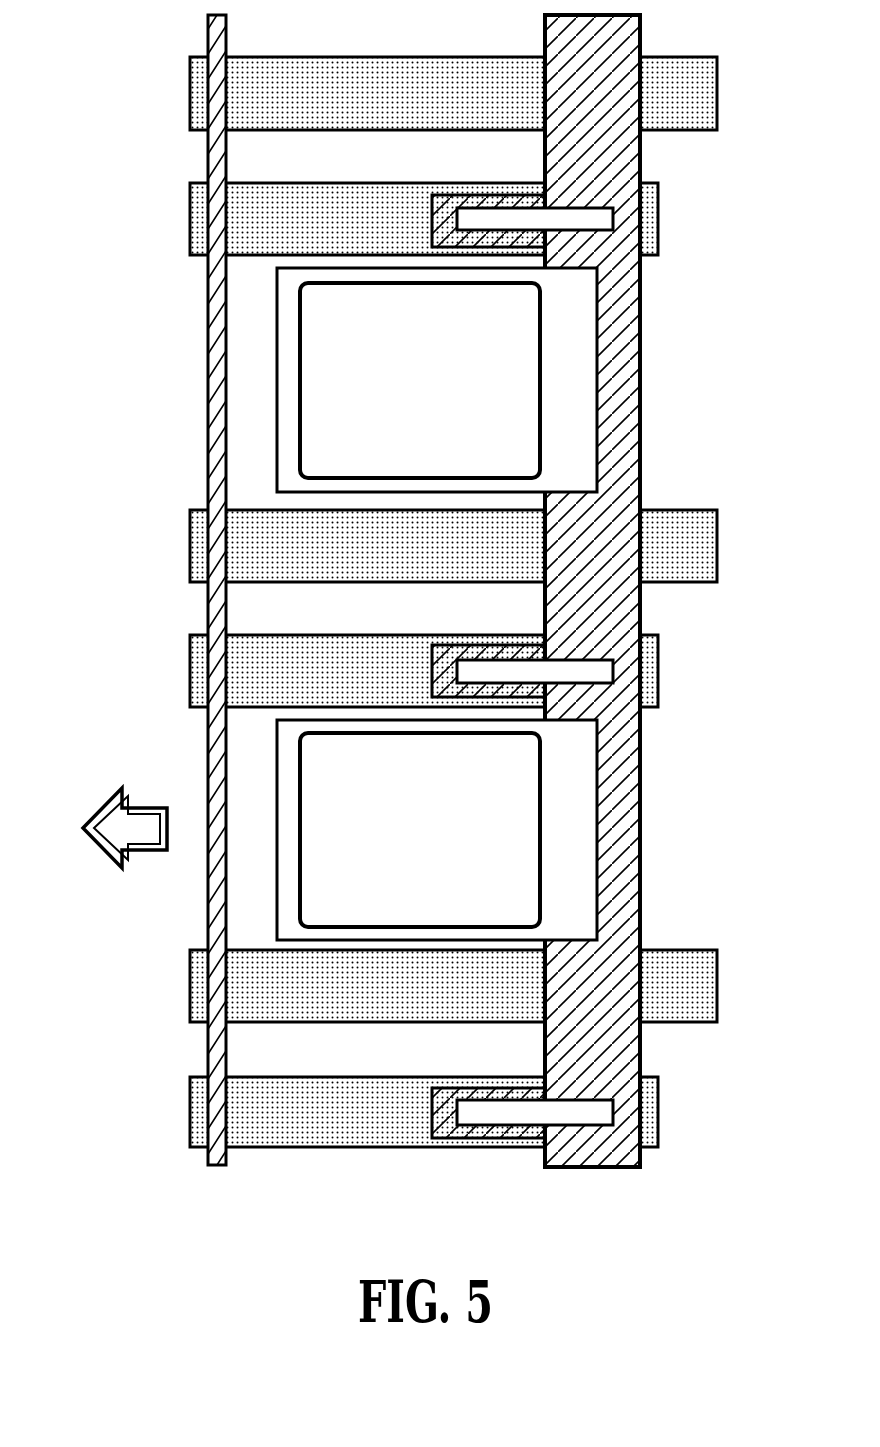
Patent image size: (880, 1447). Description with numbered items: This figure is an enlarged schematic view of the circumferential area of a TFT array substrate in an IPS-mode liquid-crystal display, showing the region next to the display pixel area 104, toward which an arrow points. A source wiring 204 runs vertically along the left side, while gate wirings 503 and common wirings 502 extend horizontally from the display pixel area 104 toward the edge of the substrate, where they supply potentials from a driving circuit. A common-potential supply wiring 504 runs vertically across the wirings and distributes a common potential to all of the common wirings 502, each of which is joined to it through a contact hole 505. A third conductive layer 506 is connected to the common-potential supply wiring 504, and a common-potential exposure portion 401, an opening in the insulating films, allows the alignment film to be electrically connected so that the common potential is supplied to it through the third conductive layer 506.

The display pixel area 104 is at (55, 845).
The source wiring 204 is at (208, 400).
The common-potential exposure portion 401 is at (433, 391).
The common wiring 502 is at (660, 232).
The gate wiring 503 is at (713, 93).
The common-potential supply wiring 504 is at (618, 605).
The contact hole 505 is at (587, 220).
The third conductive layer 506 is at (590, 350).